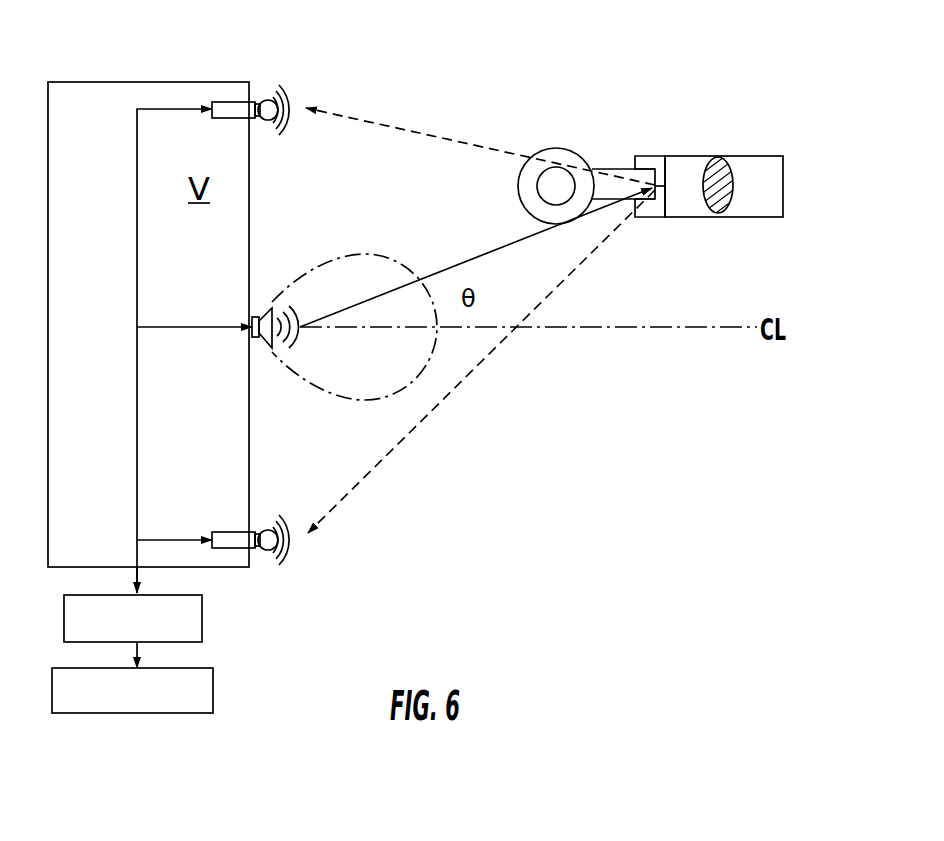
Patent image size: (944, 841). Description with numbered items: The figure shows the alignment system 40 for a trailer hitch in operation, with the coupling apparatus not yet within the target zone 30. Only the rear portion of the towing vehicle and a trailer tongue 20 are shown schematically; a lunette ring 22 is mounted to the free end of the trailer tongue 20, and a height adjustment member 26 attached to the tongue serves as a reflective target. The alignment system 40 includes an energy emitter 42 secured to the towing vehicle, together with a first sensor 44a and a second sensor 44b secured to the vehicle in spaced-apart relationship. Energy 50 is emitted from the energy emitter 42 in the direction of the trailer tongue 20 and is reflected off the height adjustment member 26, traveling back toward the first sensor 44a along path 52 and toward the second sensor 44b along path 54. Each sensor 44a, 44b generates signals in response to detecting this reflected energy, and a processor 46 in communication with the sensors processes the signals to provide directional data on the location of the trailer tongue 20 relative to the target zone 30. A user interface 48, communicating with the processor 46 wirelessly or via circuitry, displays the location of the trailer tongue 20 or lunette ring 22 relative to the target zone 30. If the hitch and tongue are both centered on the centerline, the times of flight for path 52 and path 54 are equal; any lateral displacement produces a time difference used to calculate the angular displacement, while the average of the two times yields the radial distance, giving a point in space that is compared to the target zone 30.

The trailer tongue 20 is at (782, 153).
The lunette ring 22 is at (562, 148).
The height adjustment member 26 is at (650, 155).
The target zone 30 is at (373, 253).
The alignment system 40 is at (393, 497).
The energy emitter 42 is at (264, 306).
The first sensor 44a is at (265, 98).
The second sensor 44b is at (265, 528).
The processor 46 is at (204, 620).
The user interface 48 is at (215, 690).
The energy 50 is at (481, 255).
The path 52 is at (355, 116).
The path 54 is at (456, 395).